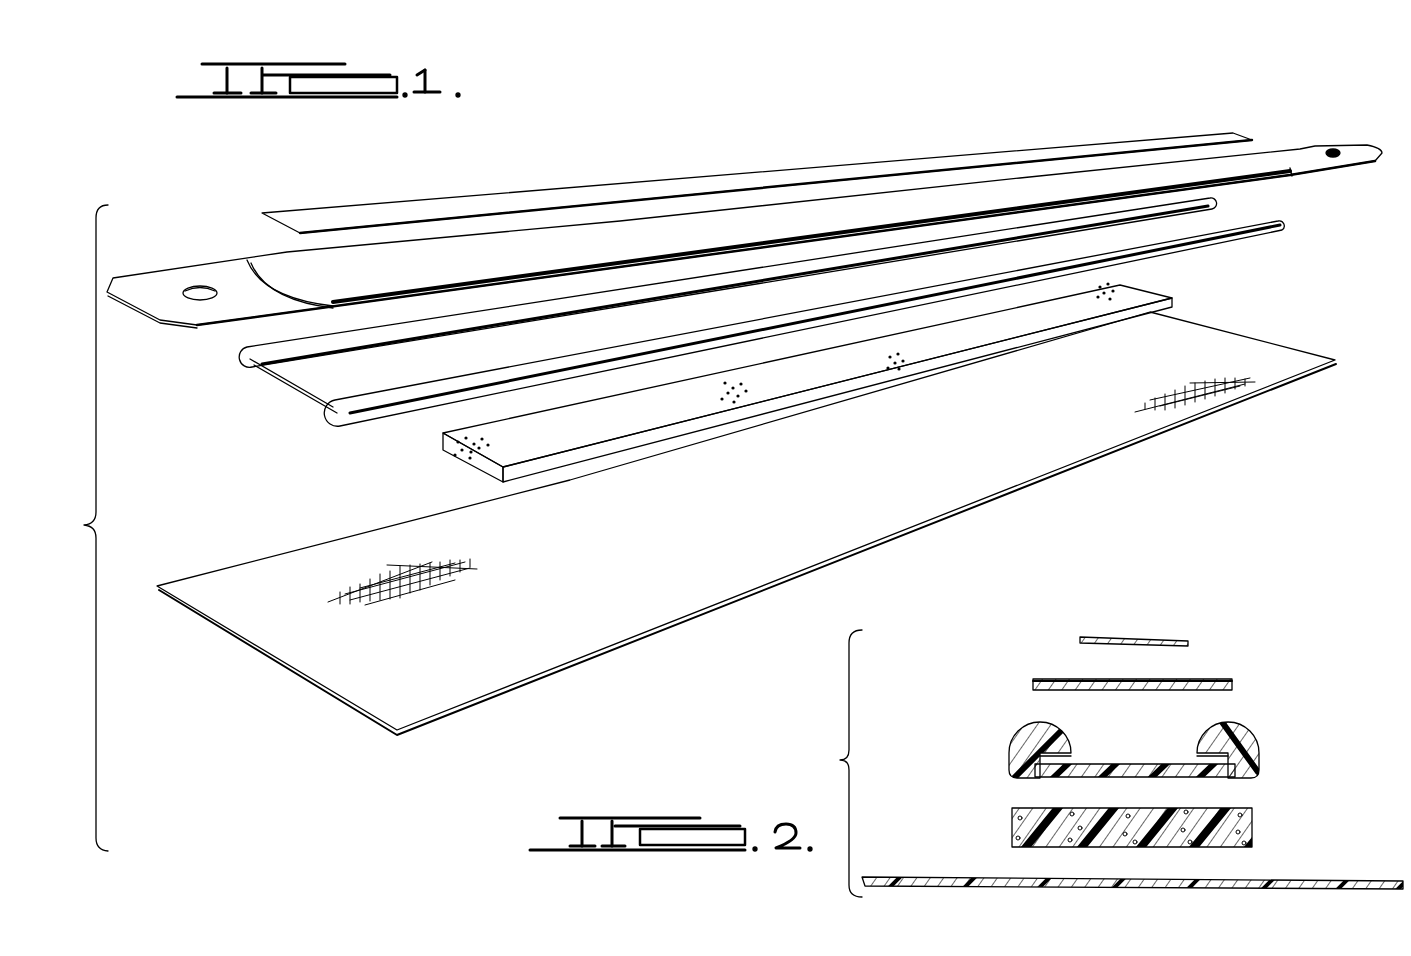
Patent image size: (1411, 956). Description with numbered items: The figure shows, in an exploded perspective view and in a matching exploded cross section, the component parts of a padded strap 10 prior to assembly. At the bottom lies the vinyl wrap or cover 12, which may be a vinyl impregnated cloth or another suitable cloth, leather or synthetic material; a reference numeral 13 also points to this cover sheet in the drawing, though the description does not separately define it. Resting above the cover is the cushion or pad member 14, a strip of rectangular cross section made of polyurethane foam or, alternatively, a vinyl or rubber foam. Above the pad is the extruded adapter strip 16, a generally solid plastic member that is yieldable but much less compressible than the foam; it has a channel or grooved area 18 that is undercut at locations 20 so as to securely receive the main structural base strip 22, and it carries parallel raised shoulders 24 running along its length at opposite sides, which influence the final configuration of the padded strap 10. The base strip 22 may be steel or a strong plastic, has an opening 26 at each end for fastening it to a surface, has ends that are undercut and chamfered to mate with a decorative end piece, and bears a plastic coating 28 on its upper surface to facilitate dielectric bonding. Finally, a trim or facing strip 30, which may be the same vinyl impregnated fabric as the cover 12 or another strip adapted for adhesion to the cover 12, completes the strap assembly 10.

In FIG. 1, the padded strap 10 is at (87, 528).
In FIG. 2, the padded strap 10 is at (832, 763).
In FIG. 1, the vinyl wrap or cover 12 is at (746, 511).
In FIG. 2, the vinyl wrap or cover 12 is at (1360, 876).
In FIG. 1, the plate surface coating 13 is at (1221, 341).
In FIG. 1, the cushion or pad member 14 is at (444, 453).
In FIG. 2, the cushion or pad member 14 is at (1263, 830).
In FIG. 1, the adapter strip 16 is at (729, 327).
In FIG. 2, the adapter strip 16 is at (1149, 750).
In FIG. 1, the channel or grooved area 18 is at (400, 378).
In FIG. 2, the channel or grooved area 18 is at (1123, 765).
In FIG. 1, the undercut locations 20 is at (243, 366).
In FIG. 2, the undercut locations 20 is at (1027, 777).
In FIG. 1, the main structural base strip 22 is at (152, 276).
In FIG. 2, the main structural base strip 22 is at (1169, 656).
In FIG. 1, the raised shoulders 24 is at (245, 352).
In FIG. 2, the raised shoulders 24 is at (1027, 727).
In FIG. 1, the opening 26 is at (200, 289).
In FIG. 1, the plastic coating 28 is at (380, 284).
In FIG. 2, the plastic coating 28 is at (1209, 679).
In FIG. 1, the trim or facing strip 30 is at (342, 211).
In FIG. 2, the trim or facing strip 30 is at (1148, 638).